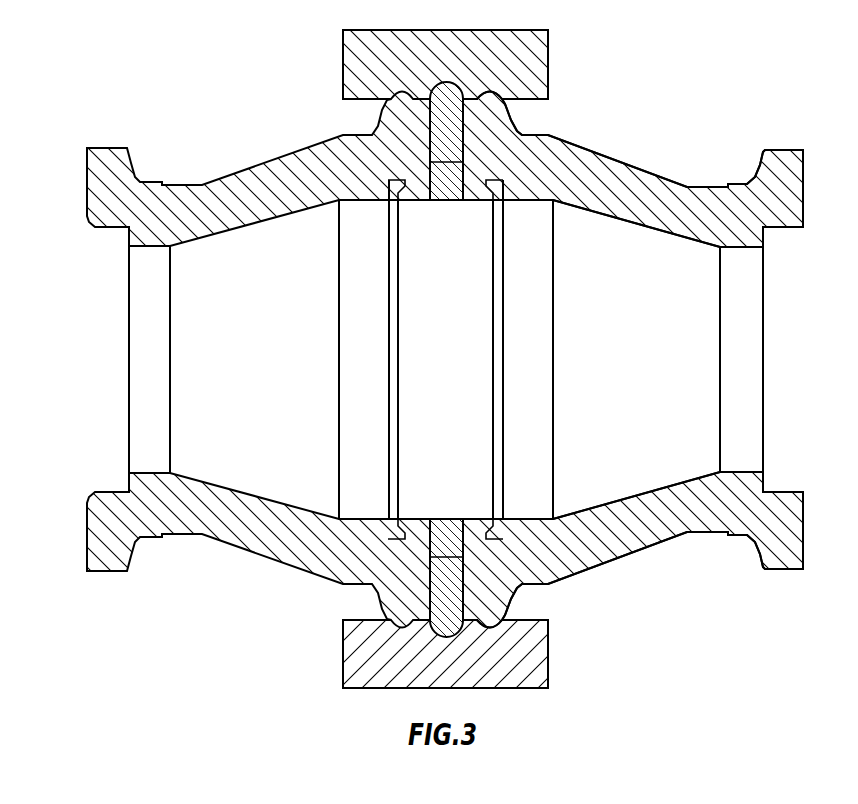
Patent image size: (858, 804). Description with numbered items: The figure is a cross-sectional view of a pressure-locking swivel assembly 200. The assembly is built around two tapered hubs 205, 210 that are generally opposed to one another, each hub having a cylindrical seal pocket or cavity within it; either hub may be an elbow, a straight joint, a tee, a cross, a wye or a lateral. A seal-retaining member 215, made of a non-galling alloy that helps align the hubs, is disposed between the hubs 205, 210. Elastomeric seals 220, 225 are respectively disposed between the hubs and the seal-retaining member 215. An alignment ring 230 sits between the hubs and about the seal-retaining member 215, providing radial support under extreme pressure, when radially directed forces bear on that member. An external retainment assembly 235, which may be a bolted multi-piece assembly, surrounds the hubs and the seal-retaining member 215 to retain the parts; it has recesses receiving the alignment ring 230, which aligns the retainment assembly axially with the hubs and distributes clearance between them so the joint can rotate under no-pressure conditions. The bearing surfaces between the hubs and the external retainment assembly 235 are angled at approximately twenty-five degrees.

The pressure-locking swivel assembly 200 is at (429, 402).
The tapered hub 205 is at (262, 185).
The tapered hub 210 is at (635, 185).
The seal-retaining member 215 is at (455, 321).
The elastomeric seal 220 is at (386, 297).
The elastomeric seal 225 is at (505, 290).
The alignment ring 230 is at (460, 123).
The external retainment assembly 235 is at (520, 51).